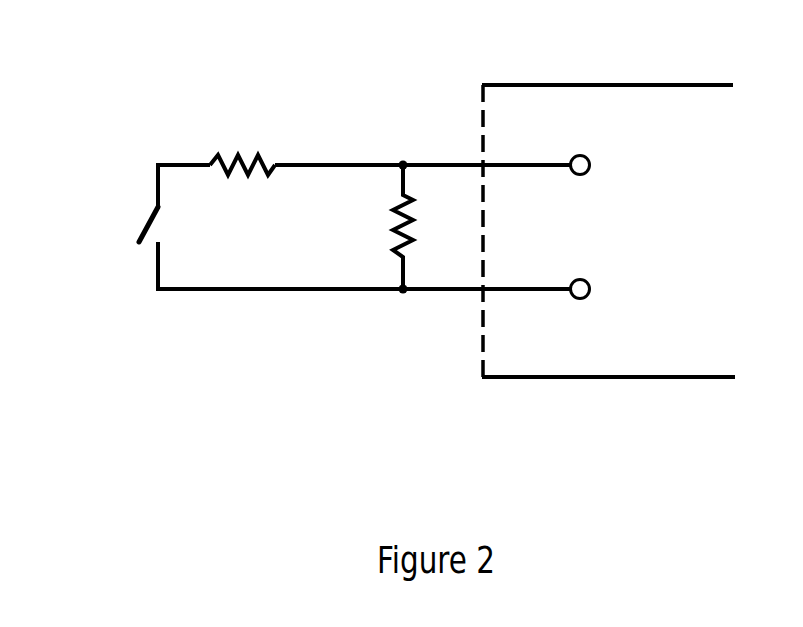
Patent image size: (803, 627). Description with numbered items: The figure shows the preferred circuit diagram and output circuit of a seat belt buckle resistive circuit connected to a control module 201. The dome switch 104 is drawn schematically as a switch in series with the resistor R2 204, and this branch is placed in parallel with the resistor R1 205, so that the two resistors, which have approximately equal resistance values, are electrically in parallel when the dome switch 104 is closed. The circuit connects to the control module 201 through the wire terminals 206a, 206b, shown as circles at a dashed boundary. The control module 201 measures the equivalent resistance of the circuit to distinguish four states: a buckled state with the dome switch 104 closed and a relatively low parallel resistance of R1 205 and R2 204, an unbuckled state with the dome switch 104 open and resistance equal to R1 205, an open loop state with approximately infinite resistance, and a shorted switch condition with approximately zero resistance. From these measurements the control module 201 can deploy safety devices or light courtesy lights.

The dome switch 104 is at (150, 223).
The control module 201 is at (642, 377).
The resistor R2 204 is at (247, 145).
The resistor R1 205 is at (385, 202).
The wire terminal 206a is at (580, 155).
The wire terminal 206b is at (582, 299).